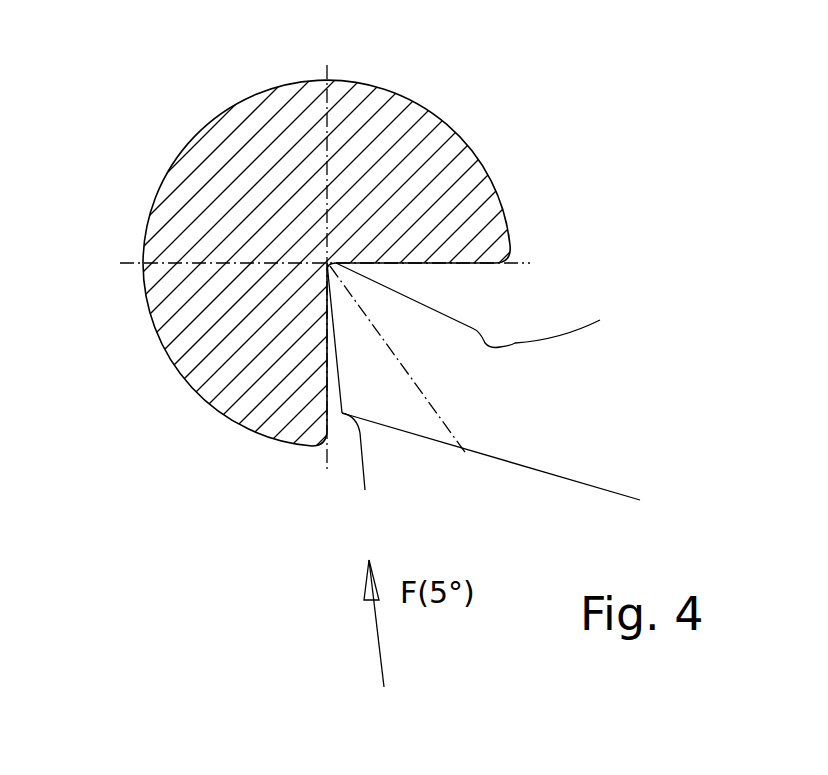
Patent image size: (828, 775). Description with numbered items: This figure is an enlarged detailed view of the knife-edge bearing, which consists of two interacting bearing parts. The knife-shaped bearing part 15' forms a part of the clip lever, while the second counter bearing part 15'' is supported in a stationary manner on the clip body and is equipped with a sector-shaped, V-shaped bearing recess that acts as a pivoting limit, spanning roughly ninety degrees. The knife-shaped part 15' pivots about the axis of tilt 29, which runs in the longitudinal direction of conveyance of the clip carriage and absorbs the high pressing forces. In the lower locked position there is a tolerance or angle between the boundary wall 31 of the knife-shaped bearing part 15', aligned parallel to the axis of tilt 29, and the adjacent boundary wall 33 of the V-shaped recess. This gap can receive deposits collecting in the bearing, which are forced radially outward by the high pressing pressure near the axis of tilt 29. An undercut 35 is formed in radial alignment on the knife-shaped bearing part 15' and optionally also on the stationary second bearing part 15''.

The second counter bearing part 15'' is at (414, 240).
The knife-shaped bearing part 15' is at (511, 229).
The axis of tilt 29 is at (327, 262).
The boundary wall 31 is at (340, 380).
The adjacent boundary wall 33 is at (672, 500).
The undercut 35 is at (507, 343).